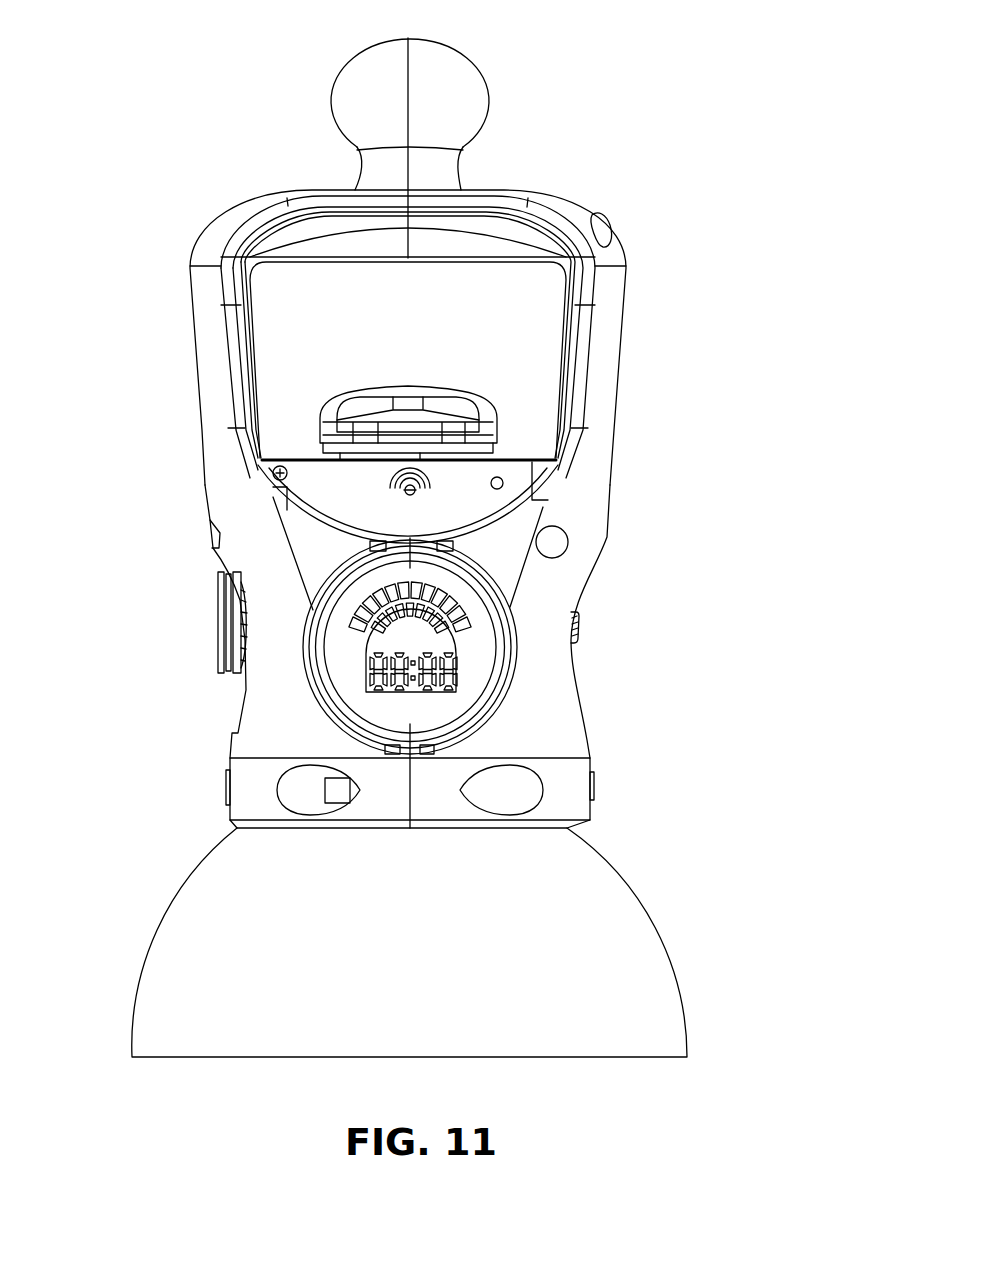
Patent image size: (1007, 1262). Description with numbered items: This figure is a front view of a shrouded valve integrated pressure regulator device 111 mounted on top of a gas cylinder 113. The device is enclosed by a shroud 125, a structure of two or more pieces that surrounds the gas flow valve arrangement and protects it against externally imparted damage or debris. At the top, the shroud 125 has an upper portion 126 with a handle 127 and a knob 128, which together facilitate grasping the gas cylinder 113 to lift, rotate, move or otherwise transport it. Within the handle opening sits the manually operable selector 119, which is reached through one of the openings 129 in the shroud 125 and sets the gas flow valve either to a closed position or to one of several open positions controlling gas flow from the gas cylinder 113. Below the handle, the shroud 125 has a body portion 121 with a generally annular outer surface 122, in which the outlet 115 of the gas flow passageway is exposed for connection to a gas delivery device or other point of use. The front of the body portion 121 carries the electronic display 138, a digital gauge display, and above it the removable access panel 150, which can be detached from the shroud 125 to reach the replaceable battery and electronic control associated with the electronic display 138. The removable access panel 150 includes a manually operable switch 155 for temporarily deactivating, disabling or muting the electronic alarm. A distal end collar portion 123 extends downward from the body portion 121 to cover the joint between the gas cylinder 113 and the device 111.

The shrouded valve integrated pressure regulator device 111 is at (160, 181).
The knob 128 is at (488, 98).
The handle 127 is at (528, 248).
The upper portion 126 is at (650, 317).
The manually operable selector 119 is at (474, 385).
The openings 129 is at (517, 449).
The manually operable switch 155 is at (504, 483).
The removable access panel 150 is at (490, 506).
The shroud 125 is at (248, 552).
The body portion 121 is at (600, 593).
The generally annular outer surface 122 is at (272, 590).
The outlet 115 is at (578, 628).
The electronic display 138 is at (472, 665).
The distal end collar portion 123 is at (220, 824).
The gas cylinder 113 is at (634, 900).